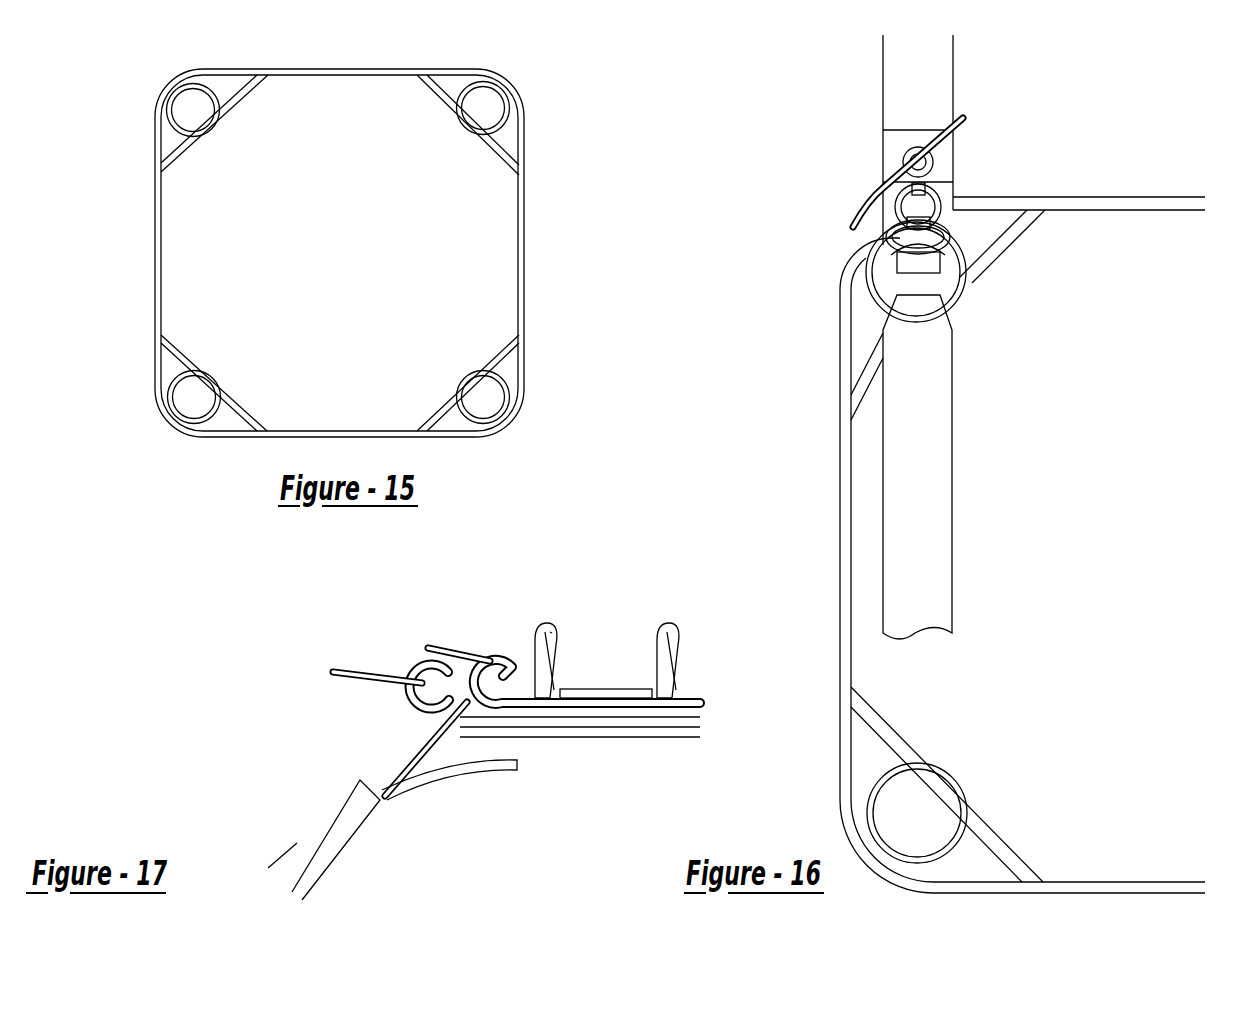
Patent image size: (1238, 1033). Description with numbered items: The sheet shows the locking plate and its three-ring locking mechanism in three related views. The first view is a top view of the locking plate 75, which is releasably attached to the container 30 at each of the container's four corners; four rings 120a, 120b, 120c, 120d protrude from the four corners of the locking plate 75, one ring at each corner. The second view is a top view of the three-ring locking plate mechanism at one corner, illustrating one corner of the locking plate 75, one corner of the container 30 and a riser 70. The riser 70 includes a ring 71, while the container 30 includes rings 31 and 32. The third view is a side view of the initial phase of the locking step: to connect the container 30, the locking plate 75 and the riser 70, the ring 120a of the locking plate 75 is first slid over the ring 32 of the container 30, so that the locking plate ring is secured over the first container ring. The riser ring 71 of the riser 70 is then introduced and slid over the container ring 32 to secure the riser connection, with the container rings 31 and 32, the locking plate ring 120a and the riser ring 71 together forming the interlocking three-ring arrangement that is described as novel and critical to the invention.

In FIG. 16, the container 30 is at (950, 85).
In FIG. 17, the container 30 is at (690, 700).
In FIG. 16, the ring 31 is at (940, 200).
In FIG. 17, the ring 31 is at (438, 648).
In FIG. 16, the ring 32 is at (882, 232).
In FIG. 17, the ring 32 is at (345, 672).
In FIG. 16, the riser 70 is at (933, 395).
In FIG. 16, the ring 71 is at (965, 275).
In FIG. 15, the locking plate 75 is at (535, 248).
In FIG. 17, the locking plate 75 is at (297, 843).
In FIG. 15, the ring 120a is at (170, 128).
In FIG. 16, the ring 120a is at (872, 306).
In FIG. 17, the ring 120a is at (392, 765).
In FIG. 15, the ring 120b is at (508, 129).
In FIG. 15, the ring 120c is at (173, 376).
In FIG. 15, the ring 120d is at (508, 378).